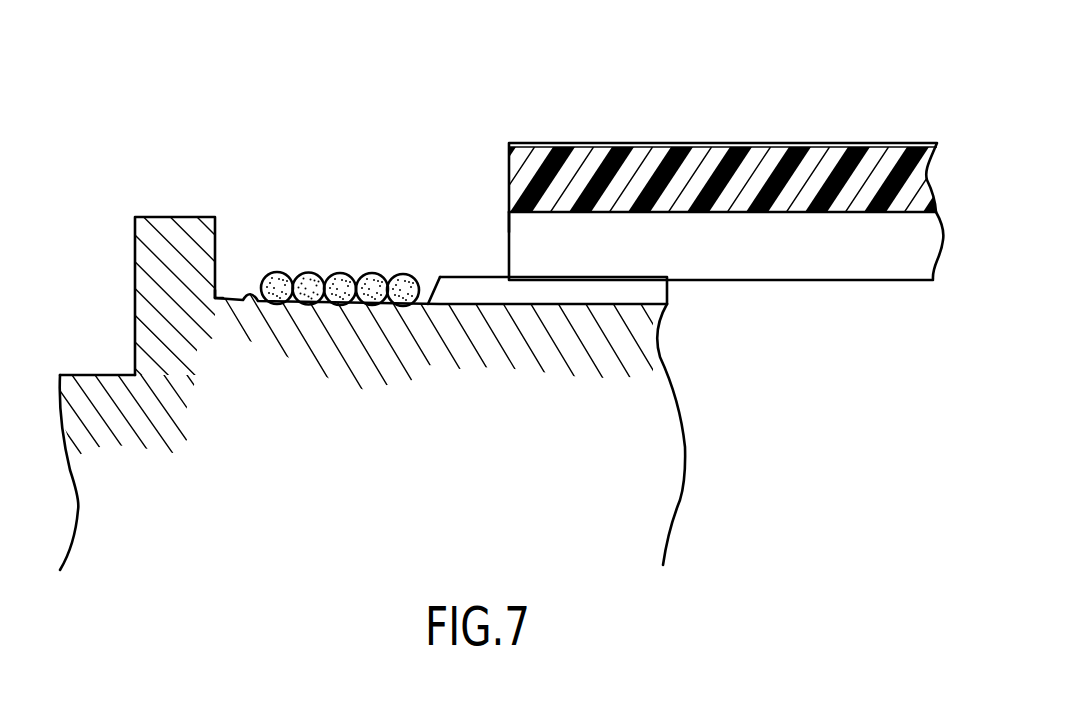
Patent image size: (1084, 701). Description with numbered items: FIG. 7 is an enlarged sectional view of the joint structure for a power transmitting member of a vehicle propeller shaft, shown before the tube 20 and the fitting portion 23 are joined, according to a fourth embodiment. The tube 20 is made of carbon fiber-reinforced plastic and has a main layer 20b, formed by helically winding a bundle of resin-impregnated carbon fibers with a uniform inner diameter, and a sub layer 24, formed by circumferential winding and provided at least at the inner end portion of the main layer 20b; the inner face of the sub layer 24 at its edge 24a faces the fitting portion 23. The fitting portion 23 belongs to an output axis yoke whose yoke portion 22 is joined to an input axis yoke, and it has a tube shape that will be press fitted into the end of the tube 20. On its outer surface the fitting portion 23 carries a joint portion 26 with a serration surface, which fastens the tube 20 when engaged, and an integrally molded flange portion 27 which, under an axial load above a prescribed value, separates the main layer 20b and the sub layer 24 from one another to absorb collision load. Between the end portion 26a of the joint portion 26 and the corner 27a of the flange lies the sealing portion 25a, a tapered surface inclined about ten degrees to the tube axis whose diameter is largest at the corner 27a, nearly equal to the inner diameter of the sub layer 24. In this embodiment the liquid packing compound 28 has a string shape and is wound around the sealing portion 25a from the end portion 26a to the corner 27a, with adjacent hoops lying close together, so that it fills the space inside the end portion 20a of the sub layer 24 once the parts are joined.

The tube 20 is at (719, 133).
The end portion of the sub layer 20a is at (549, 243).
The main layer 20b is at (767, 167).
The yoke portion 22 is at (97, 387).
The fitting portion 23 is at (662, 500).
The sub layer 24 is at (828, 257).
The edge of substrate plate 24a is at (508, 222).
The sealing portion 25a is at (262, 299).
The joint portion 26 is at (512, 292).
The end portion of the joint portion 26a is at (430, 293).
The flange portion 27 is at (170, 235).
The corner 27a is at (217, 292).
The liquid packing compound 28 is at (392, 280).